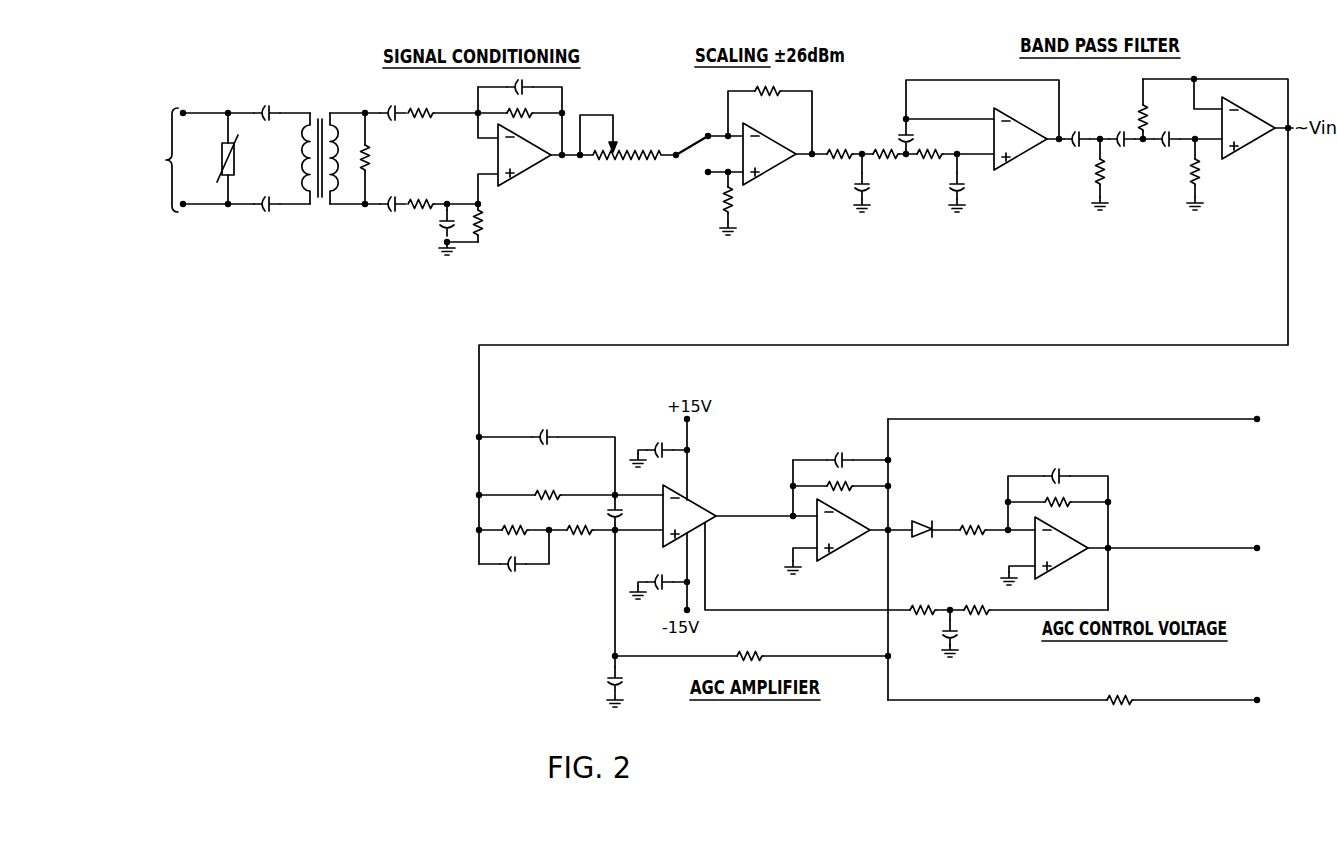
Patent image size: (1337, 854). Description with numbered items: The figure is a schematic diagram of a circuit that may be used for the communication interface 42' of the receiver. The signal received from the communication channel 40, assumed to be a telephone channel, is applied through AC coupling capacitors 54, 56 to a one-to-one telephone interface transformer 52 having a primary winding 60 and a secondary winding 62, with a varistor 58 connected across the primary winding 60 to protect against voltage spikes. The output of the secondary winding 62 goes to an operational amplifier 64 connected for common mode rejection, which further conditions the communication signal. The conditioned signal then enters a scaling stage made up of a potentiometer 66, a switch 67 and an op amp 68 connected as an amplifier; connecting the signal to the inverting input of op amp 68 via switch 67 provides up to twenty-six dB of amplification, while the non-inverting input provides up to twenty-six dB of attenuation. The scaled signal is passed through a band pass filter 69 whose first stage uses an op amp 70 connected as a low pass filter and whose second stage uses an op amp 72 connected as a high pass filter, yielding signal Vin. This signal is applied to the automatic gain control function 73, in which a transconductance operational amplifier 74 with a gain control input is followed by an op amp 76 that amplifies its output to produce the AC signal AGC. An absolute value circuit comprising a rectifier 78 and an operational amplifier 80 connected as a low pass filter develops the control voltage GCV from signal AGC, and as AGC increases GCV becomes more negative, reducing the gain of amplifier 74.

The communication channel 40 is at (149, 160).
The communication interface 42' is at (764, 746).
The telephone interface transformer 52 is at (318, 116).
The AC coupling capacitor 54 is at (262, 106).
The AC coupling capacitor 56 is at (263, 212).
The varistor 58 is at (221, 158).
The primary winding 60 is at (303, 161).
The secondary winding 62 is at (335, 166).
The operational amplifier 64 is at (524, 166).
The potentiometer 66 is at (601, 165).
The switch 67 is at (693, 155).
The op amp 68 is at (784, 139).
The band pass filter 69 is at (1112, 89).
The op amp 70 is at (1010, 126).
The op amp 72 is at (1248, 116).
The automatic gain control function 73 is at (881, 413).
The transconductance operational amplifier 74 is at (710, 507).
The op amp 76 is at (843, 521).
The rectifier 78 is at (930, 521).
The operational amplifier 80 is at (1060, 532).